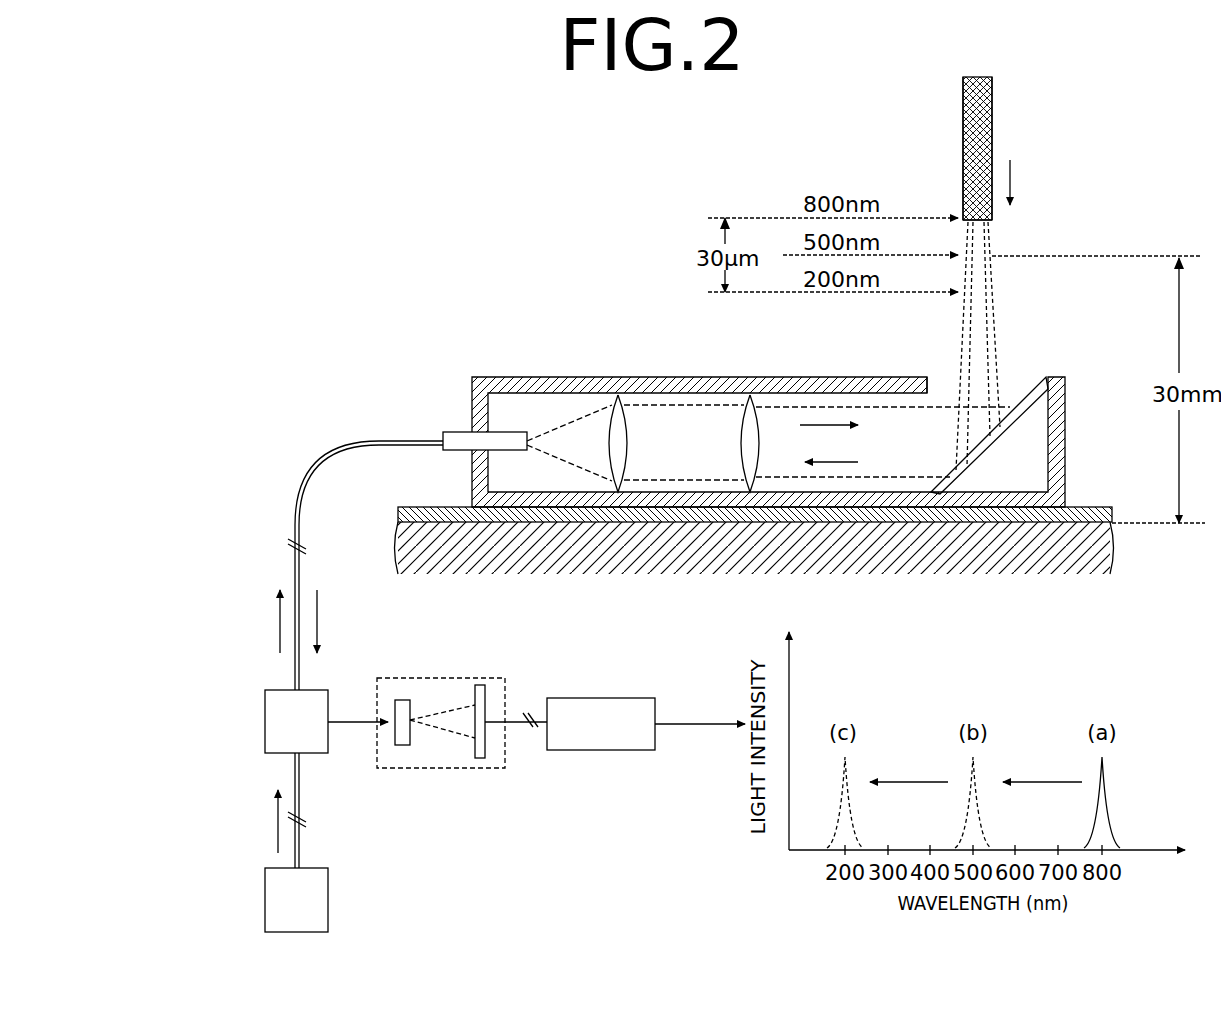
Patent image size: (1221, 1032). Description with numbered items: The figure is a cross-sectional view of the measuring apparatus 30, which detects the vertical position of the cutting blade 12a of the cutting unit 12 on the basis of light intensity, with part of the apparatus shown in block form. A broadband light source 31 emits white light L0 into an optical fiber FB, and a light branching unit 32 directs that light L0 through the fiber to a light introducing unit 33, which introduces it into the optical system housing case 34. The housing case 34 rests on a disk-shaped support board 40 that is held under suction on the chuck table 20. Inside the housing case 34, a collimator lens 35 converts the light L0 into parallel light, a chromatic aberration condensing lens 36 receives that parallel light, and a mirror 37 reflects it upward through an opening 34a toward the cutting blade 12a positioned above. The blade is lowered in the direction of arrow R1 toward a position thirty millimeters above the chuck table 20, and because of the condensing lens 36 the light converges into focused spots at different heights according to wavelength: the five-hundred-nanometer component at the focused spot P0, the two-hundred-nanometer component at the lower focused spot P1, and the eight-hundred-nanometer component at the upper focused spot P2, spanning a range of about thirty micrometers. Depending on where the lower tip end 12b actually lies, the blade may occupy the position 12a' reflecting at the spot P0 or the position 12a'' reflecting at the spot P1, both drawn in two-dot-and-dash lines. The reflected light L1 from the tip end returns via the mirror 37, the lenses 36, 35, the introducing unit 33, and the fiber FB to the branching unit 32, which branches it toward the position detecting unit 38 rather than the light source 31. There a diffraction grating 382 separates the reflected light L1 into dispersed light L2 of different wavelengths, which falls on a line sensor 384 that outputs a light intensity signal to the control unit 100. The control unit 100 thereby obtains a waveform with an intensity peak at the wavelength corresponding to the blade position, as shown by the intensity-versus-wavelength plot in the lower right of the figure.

The cutting unit 12 is at (950, 110).
The cutting blade 12a is at (1014, 148).
The lower tip end 12b is at (985, 225).
The position of cutting blade 12a' is at (1016, 345).
The position of cutting blade 12a'' is at (1033, 329).
The arrow R1 is at (1014, 184).
The focused spot P0 is at (975, 257).
The focused spot P1 is at (978, 294).
The focused spot P2 is at (975, 226).
The measuring apparatus 30 is at (460, 283).
The light introducing unit 33 is at (447, 432).
The optical system housing case 34 is at (548, 378).
The opening 34a is at (930, 385).
The collimator lens 35 is at (606, 402).
The chromatic aberration condensing lens 36 is at (744, 398).
The mirror 37 is at (1022, 390).
The support board 40 is at (1072, 510).
The chuck table 20 is at (1085, 547).
The light L0 is at (820, 415).
The reflected light L1 is at (848, 478).
The dispersed light L2 is at (445, 702).
The optical fiber FB is at (325, 467).
The light branching unit 32 is at (262, 730).
The broadband light source 31 is at (330, 900).
The position detecting unit 38 is at (436, 770).
The diffraction grating 382 is at (400, 700).
The line sensor 384 is at (480, 685).
The control unit 100 is at (605, 698).